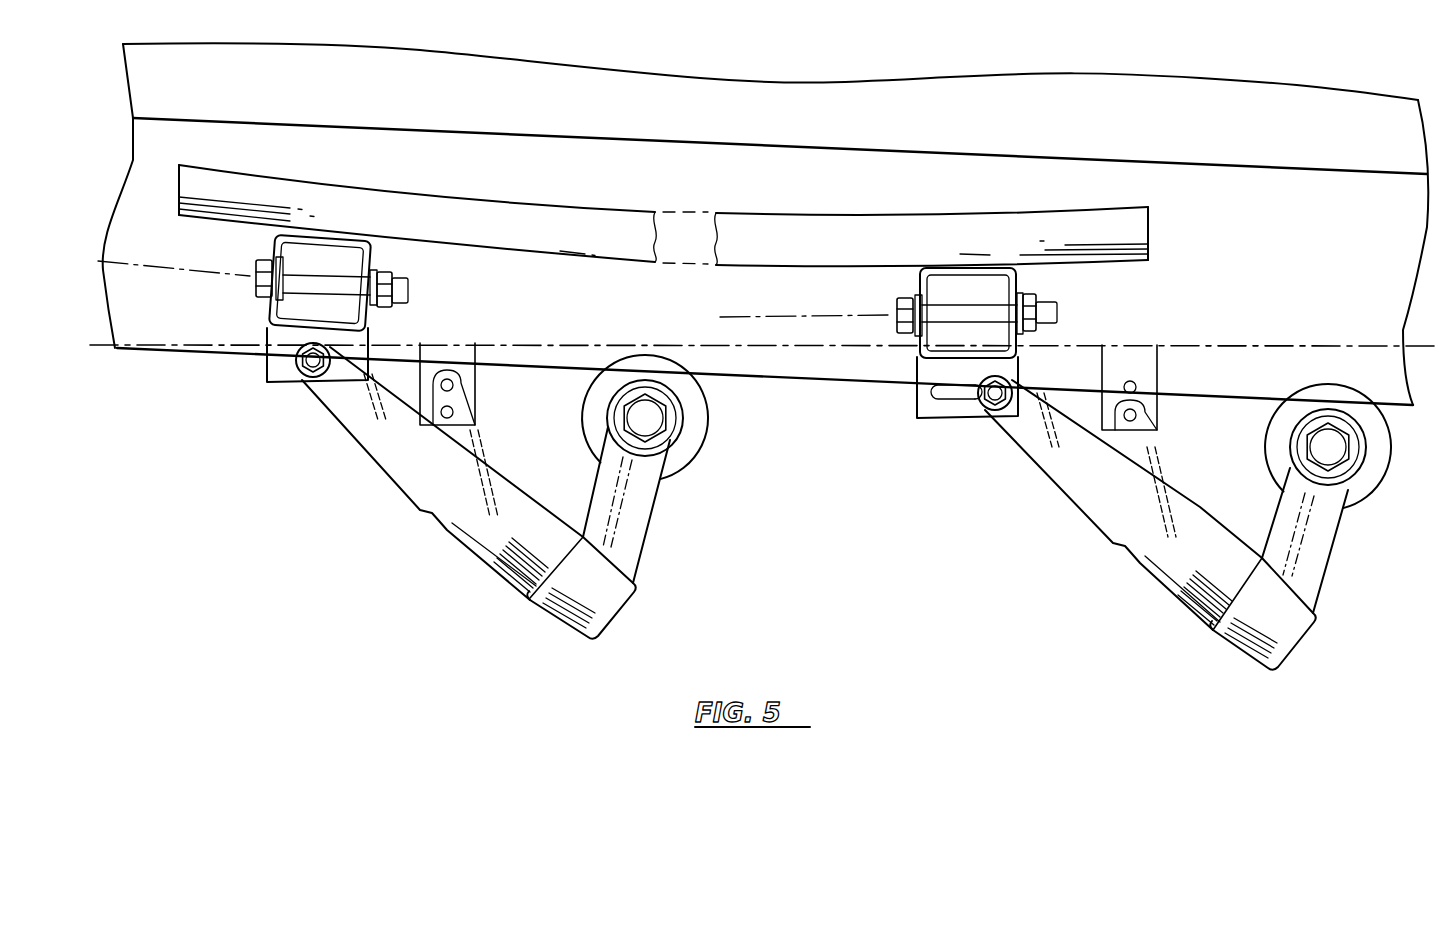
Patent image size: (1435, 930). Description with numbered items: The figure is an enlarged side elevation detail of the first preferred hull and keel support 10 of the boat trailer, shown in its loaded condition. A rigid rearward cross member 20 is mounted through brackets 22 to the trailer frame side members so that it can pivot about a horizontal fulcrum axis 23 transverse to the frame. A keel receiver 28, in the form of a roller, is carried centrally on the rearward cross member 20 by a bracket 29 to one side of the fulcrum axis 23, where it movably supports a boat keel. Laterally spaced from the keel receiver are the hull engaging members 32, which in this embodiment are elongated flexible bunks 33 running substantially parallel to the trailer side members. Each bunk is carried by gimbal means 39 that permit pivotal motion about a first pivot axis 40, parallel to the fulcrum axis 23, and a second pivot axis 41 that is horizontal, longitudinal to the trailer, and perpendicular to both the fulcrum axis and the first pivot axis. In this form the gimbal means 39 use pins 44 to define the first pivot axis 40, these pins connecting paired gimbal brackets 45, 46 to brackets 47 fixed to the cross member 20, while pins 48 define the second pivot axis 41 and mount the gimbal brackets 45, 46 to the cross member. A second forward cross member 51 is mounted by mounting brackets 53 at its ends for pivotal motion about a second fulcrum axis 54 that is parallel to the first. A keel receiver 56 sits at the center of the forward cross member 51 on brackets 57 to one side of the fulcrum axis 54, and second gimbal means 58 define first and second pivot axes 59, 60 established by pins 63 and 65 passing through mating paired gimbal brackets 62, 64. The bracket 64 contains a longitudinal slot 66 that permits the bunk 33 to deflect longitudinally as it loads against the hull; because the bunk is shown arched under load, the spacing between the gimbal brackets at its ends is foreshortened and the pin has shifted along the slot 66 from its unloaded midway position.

The hull and keel support 10 is at (931, 584).
The rearward cross member 20 is at (613, 597).
The brackets 22 is at (498, 470).
The fulcrum axis 23 is at (453, 384).
The keel receiver 28 is at (702, 428).
The bracket 29 is at (640, 523).
The hull engaging members 32 is at (1180, 226).
The flexible bunks 33 is at (839, 225).
The gimbal means 39 is at (248, 300).
The first pivot axis 40 is at (318, 393).
The second pivot axis 41 is at (152, 266).
The pins 44 is at (310, 364).
The gimbal bracket 45 is at (265, 363).
The gimbal bracket 46 is at (357, 243).
The brackets 47 is at (388, 463).
The pins 48 is at (405, 293).
The second forward cross member 51 is at (1193, 608).
The mounting brackets 53 is at (1150, 450).
The second fulcrum axis 54 is at (1134, 415).
The keel receiver 56 is at (1275, 460).
The brackets 57 is at (1320, 527).
The second gimbal means 58 is at (1069, 338).
The first pivot axis 59 is at (990, 411).
The second pivot axis 60 is at (765, 317).
The gimbal bracket 62 is at (1012, 273).
The pin 63 is at (988, 411).
The gimbal bracket 64 is at (915, 400).
The pin 65 is at (1050, 310).
The longitudinal slot 66 is at (943, 403).